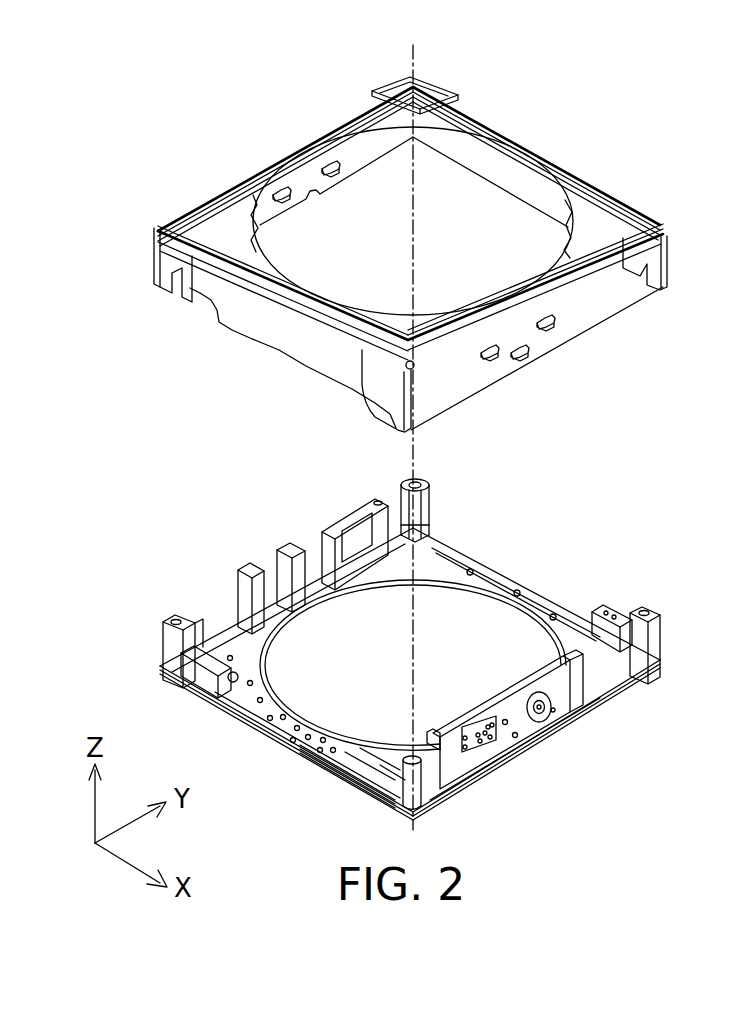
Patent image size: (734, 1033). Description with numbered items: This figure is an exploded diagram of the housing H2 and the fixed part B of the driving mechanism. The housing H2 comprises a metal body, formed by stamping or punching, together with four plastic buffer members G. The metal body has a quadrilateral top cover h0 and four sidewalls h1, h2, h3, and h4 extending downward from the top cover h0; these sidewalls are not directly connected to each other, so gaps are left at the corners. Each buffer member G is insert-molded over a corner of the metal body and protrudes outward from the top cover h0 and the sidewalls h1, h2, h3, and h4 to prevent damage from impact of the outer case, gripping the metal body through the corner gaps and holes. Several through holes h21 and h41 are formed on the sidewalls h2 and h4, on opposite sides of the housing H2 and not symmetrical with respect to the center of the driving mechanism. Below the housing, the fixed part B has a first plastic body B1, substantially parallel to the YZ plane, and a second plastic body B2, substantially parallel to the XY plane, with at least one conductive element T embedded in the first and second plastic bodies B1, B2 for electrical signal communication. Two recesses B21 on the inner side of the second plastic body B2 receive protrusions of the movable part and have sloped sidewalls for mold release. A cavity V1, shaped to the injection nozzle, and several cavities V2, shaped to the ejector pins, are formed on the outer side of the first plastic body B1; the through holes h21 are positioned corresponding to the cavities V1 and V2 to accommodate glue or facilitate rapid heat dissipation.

The housing H2 is at (190, 140).
The top cover h0 is at (226, 218).
The sidewall h1 is at (502, 166).
The sidewall h2 is at (607, 292).
The sidewall h3 is at (240, 316).
The sidewall h4 is at (353, 152).
The through holes h41 is at (328, 163).
The through holes h21 is at (490, 355).
The buffer member G is at (443, 92).
The fixed part B is at (214, 582).
The first plastic body B1 is at (571, 700).
The second plastic body B2 is at (250, 713).
The recess B21 is at (273, 570).
The conductive element T is at (356, 777).
The cavity V1 is at (543, 720).
The cavities V2 is at (488, 738).